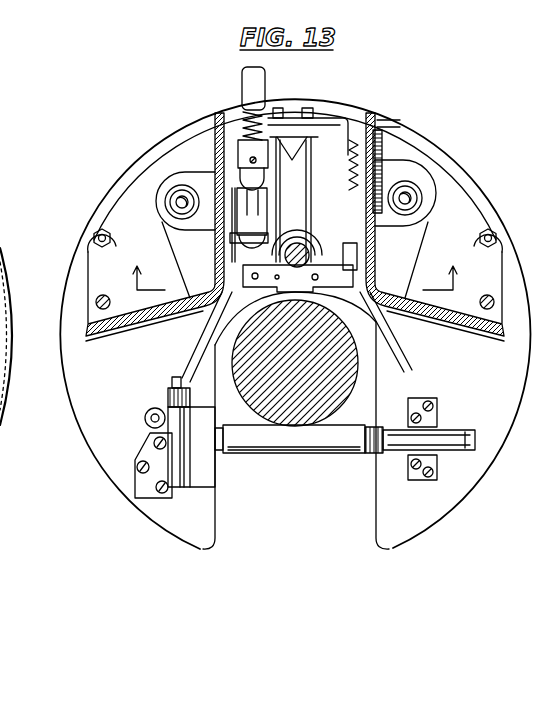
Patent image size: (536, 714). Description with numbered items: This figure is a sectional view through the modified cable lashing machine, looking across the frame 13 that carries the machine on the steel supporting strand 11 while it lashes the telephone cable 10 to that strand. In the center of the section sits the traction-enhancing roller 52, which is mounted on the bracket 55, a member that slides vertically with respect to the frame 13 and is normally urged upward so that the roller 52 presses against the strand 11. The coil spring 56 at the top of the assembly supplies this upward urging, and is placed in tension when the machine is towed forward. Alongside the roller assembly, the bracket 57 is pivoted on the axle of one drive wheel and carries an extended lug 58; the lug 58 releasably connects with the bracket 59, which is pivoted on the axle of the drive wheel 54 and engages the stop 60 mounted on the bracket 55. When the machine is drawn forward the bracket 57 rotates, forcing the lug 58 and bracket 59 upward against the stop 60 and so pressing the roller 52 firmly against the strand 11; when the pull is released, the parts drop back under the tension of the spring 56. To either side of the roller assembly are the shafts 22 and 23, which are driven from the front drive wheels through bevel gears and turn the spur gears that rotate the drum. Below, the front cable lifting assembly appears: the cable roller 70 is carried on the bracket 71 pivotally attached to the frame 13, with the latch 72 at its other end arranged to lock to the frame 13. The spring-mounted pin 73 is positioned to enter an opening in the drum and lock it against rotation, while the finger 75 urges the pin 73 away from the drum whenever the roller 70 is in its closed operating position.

The telephone cable 10 is at (330, 392).
The strand 11 is at (294, 226).
The frame portion 13 is at (462, 163).
The shaft 22 is at (178, 203).
The shaft 23 is at (410, 208).
The roller 52 is at (347, 263).
The drive wheel 54 is at (292, 158).
The bracket 55 is at (258, 281).
The coil spring 56 is at (247, 109).
The bracket 57 is at (324, 118).
The lug 58 is at (250, 213).
The bracket 59 is at (270, 175).
The stop 60 is at (242, 155).
The cable roller 70 is at (293, 445).
The bracket 71 is at (168, 478).
The latch 72 is at (452, 441).
The pin 73 is at (148, 415).
The finger 75 is at (168, 412).